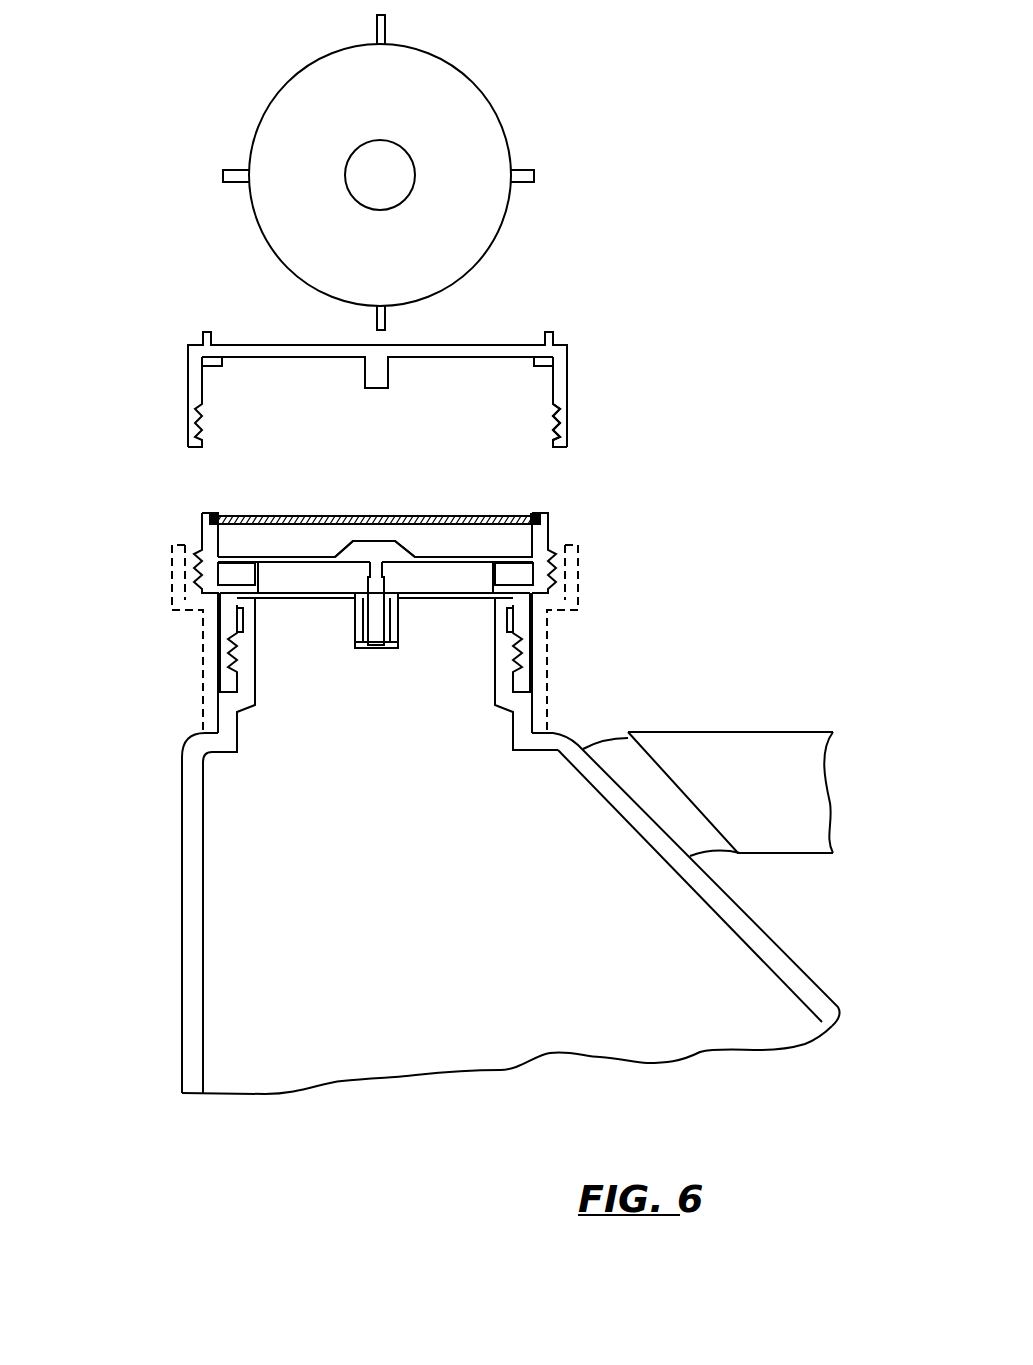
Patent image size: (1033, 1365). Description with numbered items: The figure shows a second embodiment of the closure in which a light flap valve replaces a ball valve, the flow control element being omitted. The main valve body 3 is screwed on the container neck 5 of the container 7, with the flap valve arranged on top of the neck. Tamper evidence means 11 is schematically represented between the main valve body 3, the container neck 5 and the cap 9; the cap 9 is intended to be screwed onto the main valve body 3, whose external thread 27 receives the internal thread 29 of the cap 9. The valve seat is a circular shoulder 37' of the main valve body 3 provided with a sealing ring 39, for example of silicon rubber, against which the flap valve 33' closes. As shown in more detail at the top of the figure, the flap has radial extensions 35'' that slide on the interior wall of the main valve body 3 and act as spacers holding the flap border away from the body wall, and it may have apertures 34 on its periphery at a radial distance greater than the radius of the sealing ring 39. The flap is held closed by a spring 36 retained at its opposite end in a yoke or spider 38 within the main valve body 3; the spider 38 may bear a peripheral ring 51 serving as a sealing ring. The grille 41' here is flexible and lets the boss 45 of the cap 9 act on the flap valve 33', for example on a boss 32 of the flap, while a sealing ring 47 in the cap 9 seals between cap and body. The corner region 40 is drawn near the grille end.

The main valve body 3 is at (158, 548).
The container neck 5 is at (243, 682).
The container 7 is at (170, 1062).
The cap 9 is at (574, 347).
The tamper evidence means 11 is at (208, 653).
The external thread 27 is at (580, 560).
The internal thread 29 is at (560, 430).
The boss 32 is at (400, 167).
The flap valve 33' is at (413, 303).
The apertures 34 is at (235, 168).
The radial extensions 35'' is at (561, 149).
The spring 36 is at (360, 600).
The circular shoulder 37' is at (380, 677).
The yoke or spider 38 is at (312, 600).
The sealing ring 39 is at (520, 522).
The corner 40 is at (548, 520).
The grille 41' is at (375, 495).
The boss 45 is at (388, 380).
The sealing ring 47 is at (210, 365).
The peripheral ring 51 is at (240, 605).